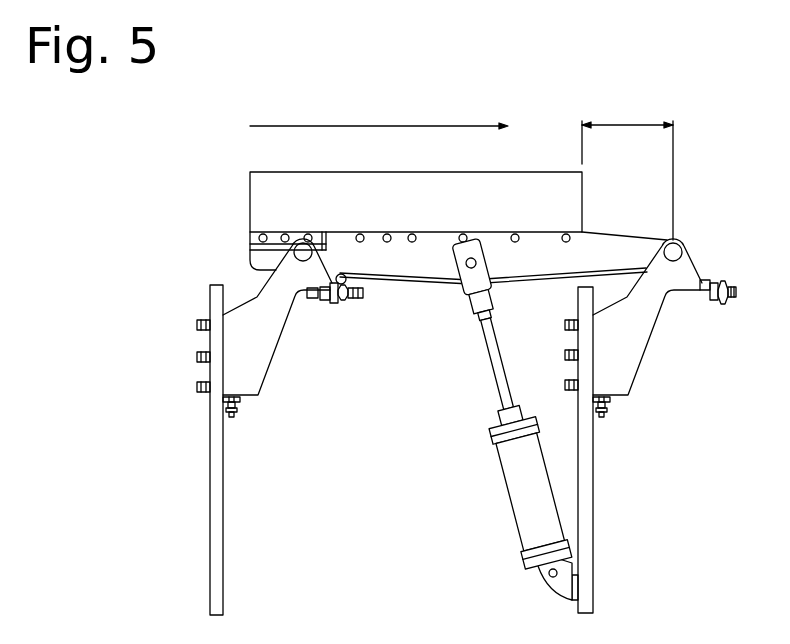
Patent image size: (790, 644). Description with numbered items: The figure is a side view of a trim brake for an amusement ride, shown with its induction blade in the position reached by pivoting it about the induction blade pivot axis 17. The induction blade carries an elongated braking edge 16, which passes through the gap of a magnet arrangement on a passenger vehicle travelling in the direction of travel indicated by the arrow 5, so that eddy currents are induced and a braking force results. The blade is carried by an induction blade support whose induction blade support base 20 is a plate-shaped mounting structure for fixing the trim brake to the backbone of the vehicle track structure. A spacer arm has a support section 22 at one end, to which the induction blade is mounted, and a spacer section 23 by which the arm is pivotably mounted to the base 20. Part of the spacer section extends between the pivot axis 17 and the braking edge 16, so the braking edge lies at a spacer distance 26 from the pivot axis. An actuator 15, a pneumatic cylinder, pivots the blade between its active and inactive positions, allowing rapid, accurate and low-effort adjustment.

The arrow 5 is at (322, 131).
The actuator 15 is at (497, 494).
The elongated braking edge 16 is at (380, 192).
The induction blade pivot axis 17 is at (692, 225).
The induction blade support base 20 is at (628, 372).
The support section 22 is at (404, 290).
The spacer section 23 is at (641, 219).
The spacer distance 26 is at (627, 169).